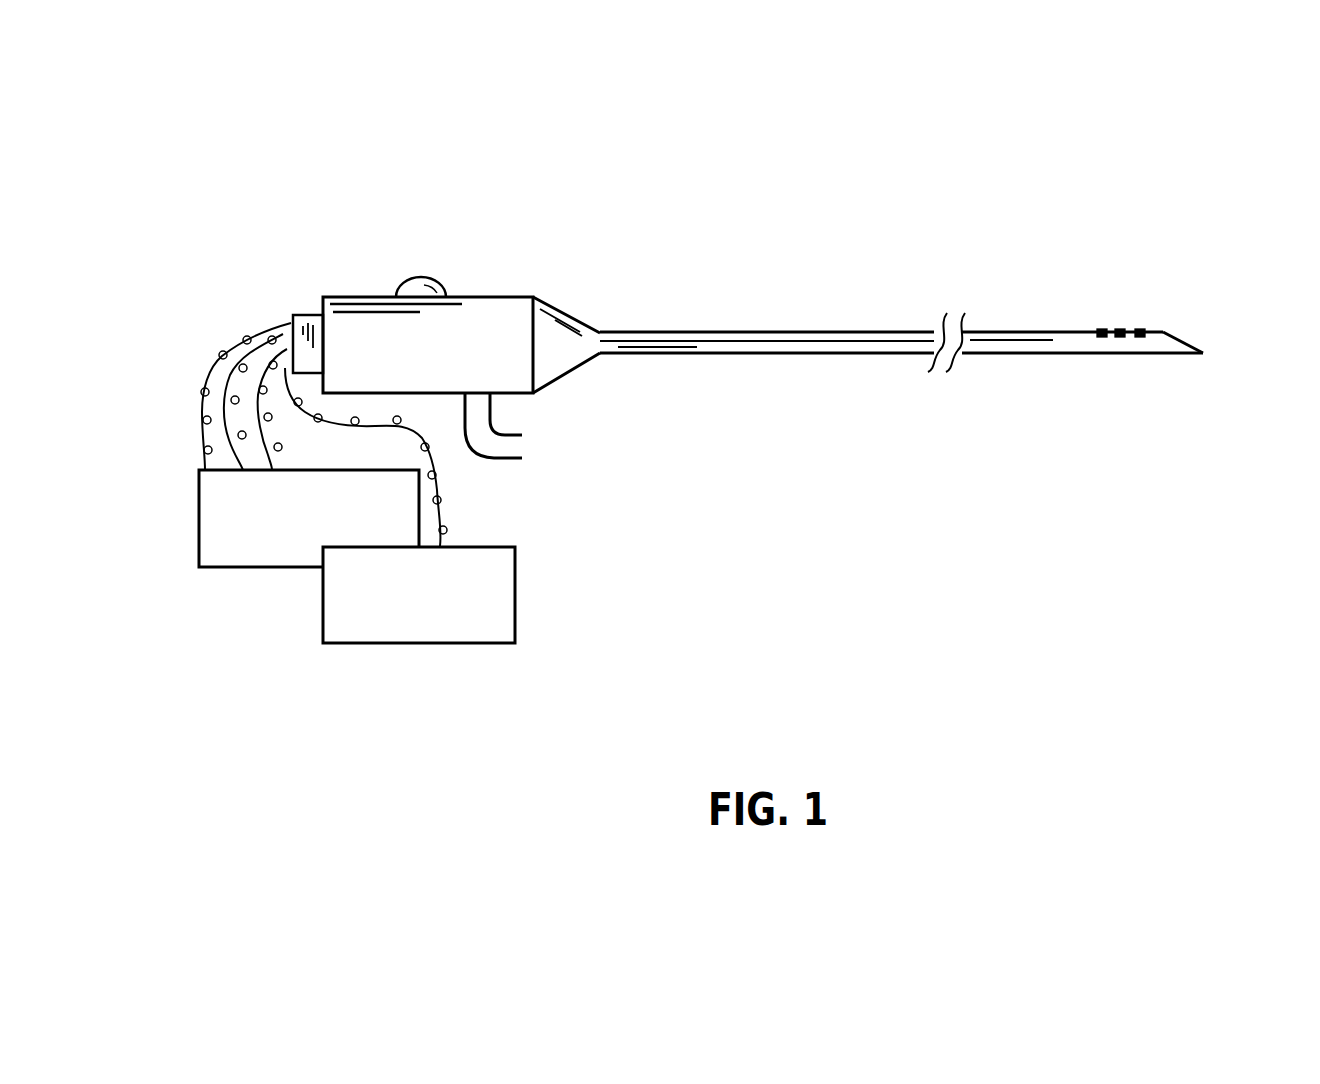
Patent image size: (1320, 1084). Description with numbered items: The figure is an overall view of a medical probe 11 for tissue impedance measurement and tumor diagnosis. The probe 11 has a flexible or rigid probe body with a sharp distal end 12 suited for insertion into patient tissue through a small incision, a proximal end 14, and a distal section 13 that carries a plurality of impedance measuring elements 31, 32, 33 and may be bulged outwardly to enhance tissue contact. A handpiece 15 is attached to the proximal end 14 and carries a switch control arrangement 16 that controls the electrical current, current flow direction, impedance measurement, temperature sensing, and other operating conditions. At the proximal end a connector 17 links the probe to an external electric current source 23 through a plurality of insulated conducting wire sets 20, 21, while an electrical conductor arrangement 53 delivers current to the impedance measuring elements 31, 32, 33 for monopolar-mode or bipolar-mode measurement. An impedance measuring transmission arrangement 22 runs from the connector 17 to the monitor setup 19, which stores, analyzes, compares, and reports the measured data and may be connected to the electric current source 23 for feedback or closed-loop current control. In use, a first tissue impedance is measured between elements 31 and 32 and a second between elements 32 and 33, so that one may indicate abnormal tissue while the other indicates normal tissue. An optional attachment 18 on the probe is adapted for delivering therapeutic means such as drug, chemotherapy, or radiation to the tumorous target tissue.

The medical probe 11 is at (789, 290).
The distal end 12 is at (1203, 352).
The distal section 13 is at (1098, 370).
The proximal end 14 is at (600, 333).
The handpiece 15 is at (483, 297).
The switch control arrangement 16 is at (428, 276).
The connector 17 is at (300, 315).
The attachment 18 is at (495, 450).
The monitor setup 19 is at (515, 625).
The insulated conducting wire set 20 is at (268, 335).
The insulated conducting wire set 21 is at (228, 340).
The impedance measuring transmission arrangement 22 is at (448, 508).
The electric current source 23 is at (238, 546).
The impedance measuring element 31 is at (1142, 328).
The impedance measuring element 32 is at (1114, 328).
The impedance measuring element 33 is at (1100, 331).
The electrical conductor arrangement 53 is at (197, 373).